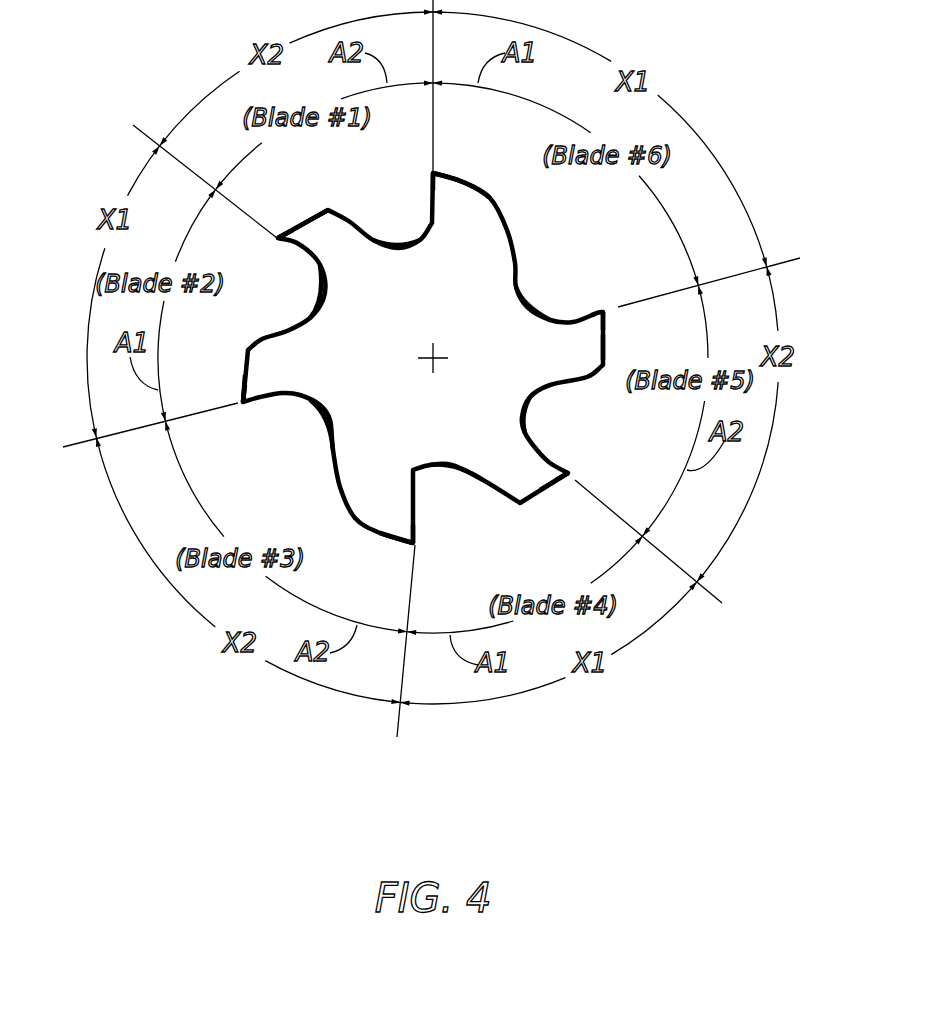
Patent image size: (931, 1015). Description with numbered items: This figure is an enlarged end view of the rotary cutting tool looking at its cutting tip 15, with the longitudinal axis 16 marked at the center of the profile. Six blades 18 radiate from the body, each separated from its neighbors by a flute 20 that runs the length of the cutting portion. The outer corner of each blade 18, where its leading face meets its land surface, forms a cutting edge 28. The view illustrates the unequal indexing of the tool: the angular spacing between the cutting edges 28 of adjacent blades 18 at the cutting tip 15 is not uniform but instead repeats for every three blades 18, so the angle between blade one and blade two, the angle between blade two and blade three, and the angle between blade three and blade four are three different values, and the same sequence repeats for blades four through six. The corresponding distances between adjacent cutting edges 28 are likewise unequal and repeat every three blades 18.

The cutting tip 15 is at (423, 426).
The longitudinal axis 16 is at (440, 350).
The blade 18 is at (468, 172).
The flute 20 is at (565, 275).
The cutting edge 28 is at (432, 172).